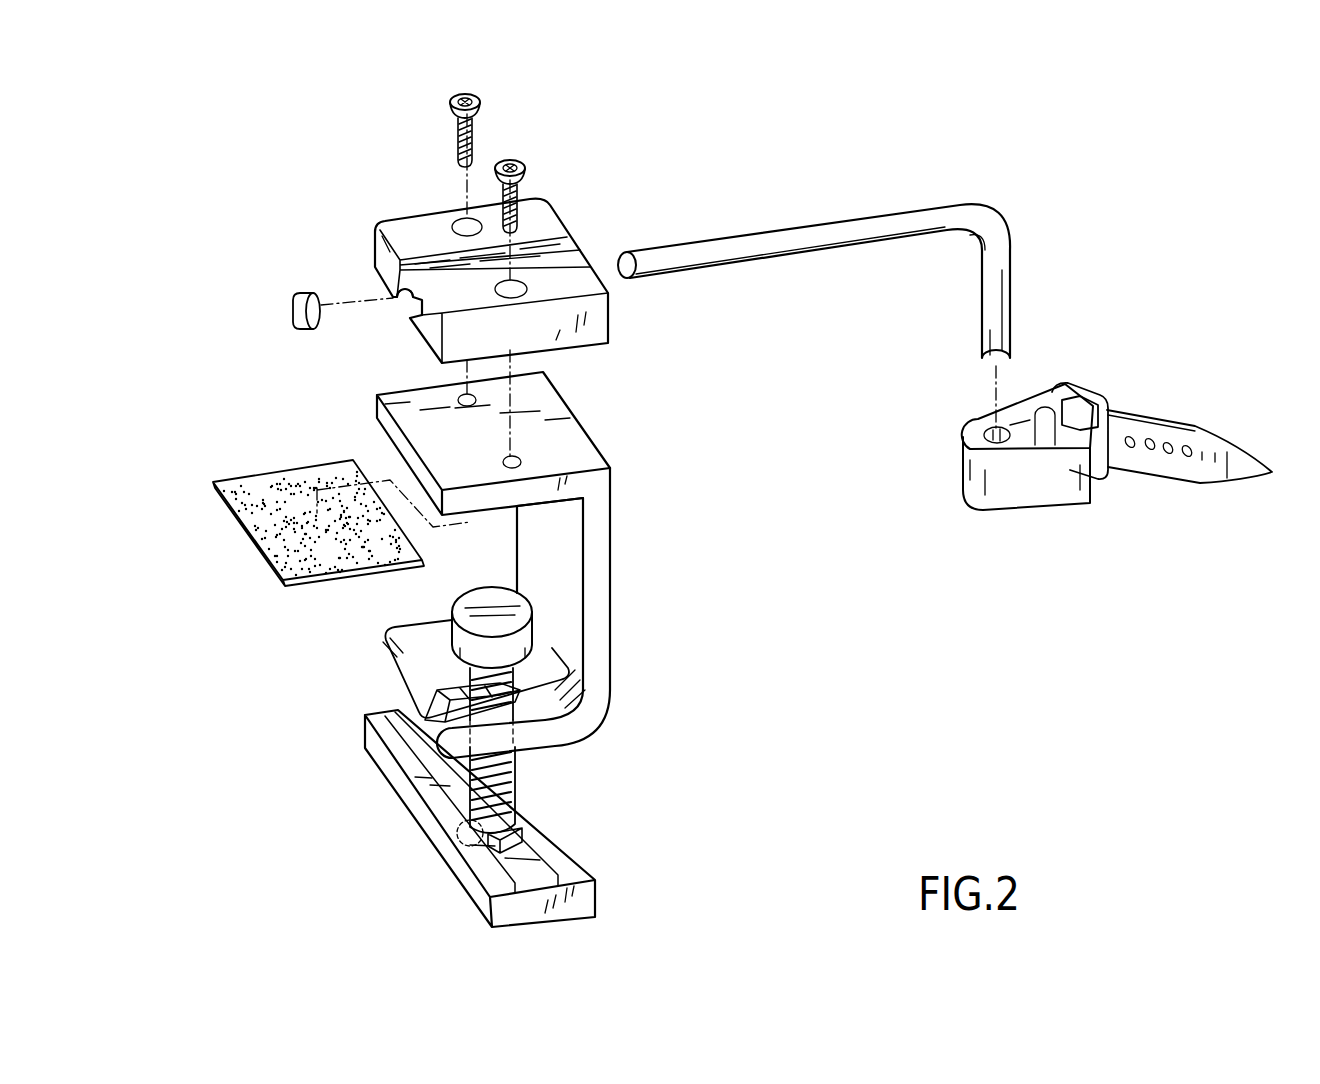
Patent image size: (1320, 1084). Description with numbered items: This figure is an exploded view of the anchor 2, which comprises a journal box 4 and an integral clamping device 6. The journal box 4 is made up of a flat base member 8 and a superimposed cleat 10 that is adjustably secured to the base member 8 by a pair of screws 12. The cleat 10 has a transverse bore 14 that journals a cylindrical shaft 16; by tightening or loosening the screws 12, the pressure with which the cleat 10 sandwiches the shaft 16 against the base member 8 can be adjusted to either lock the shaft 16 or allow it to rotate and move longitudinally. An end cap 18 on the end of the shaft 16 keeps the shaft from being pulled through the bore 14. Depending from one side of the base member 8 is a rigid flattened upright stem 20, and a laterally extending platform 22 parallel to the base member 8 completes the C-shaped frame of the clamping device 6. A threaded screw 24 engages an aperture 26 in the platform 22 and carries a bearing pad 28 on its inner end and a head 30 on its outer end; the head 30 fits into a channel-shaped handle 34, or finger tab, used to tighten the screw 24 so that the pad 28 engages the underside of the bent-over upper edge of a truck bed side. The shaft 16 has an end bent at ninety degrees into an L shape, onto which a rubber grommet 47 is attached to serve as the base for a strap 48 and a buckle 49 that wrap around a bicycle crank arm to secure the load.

The anchor 2 is at (665, 497).
The journal box 4 is at (613, 388).
The clamping device 6 is at (372, 603).
The base member 8 is at (584, 450).
The cleat 10 is at (543, 220).
The screws 12 is at (482, 102).
The transverse bore 14 is at (405, 298).
The shaft 16 is at (657, 257).
The end cap 18 is at (292, 312).
The stem 20 is at (600, 545).
The platform 22 is at (418, 673).
The threaded screw 24 is at (503, 768).
The aperture 26 is at (508, 686).
The bearing pad 28 is at (477, 597).
The head 30 is at (515, 840).
The handle 34 is at (573, 863).
The rubber grommet 47 is at (973, 430).
The strap 48 is at (1053, 494).
The buckle 49 is at (1100, 400).